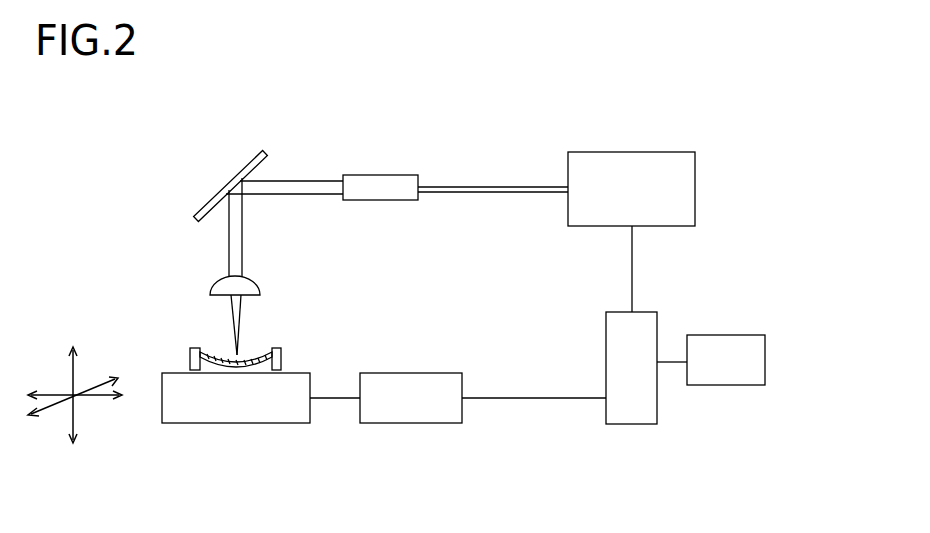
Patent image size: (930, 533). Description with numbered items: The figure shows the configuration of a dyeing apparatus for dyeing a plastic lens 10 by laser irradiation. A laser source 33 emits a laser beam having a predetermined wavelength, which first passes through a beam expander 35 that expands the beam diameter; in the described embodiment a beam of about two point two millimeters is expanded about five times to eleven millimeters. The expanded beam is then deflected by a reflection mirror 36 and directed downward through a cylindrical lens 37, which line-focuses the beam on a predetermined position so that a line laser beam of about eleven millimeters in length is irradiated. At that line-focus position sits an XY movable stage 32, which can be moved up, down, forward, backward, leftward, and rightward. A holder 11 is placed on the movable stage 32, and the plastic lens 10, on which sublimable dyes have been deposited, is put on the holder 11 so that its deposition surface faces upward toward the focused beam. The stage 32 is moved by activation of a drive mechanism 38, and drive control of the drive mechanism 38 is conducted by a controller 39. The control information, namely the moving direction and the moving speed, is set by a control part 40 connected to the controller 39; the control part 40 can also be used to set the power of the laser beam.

The plastic lens 10 is at (255, 356).
The holder 11 is at (282, 358).
The XY movable stage 32 is at (237, 415).
The laser source 33 is at (642, 158).
The beam expander 35 is at (378, 183).
The reflection mirror 36 is at (248, 162).
The cylindrical lens 37 is at (252, 279).
The drive mechanism 38 is at (412, 383).
The controller 39 is at (616, 340).
The control part 40 is at (720, 343).